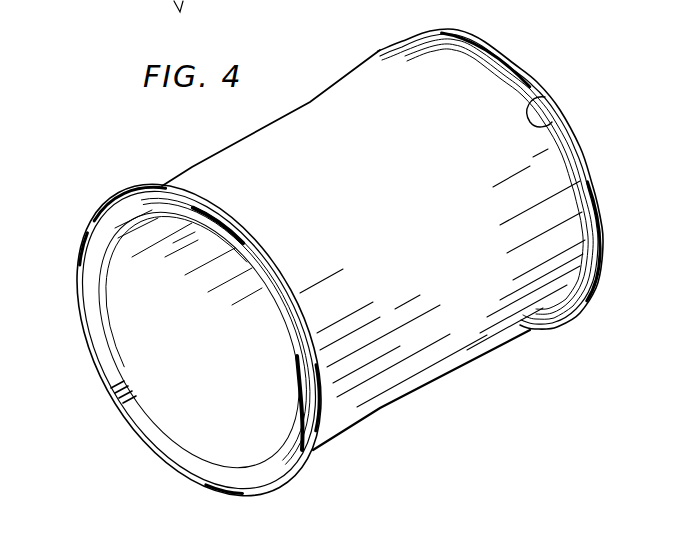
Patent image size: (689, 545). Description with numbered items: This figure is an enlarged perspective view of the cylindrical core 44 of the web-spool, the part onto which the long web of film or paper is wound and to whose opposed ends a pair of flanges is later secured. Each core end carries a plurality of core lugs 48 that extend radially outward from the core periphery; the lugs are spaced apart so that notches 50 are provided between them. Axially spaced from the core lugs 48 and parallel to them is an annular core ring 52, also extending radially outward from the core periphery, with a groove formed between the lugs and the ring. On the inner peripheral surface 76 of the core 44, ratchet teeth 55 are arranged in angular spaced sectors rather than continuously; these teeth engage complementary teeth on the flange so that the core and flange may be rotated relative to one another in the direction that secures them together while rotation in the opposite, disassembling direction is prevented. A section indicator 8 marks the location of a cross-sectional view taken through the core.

The section view indicator 8 is at (172, 9).
The cylindrical core 44 is at (228, 129).
The core lugs 48 is at (77, 250).
The notches 50 is at (277, 307).
The annular core ring 52 is at (128, 191).
The ratchet teeth 55 is at (115, 397).
The inner peripheral surface 76 is at (95, 333).